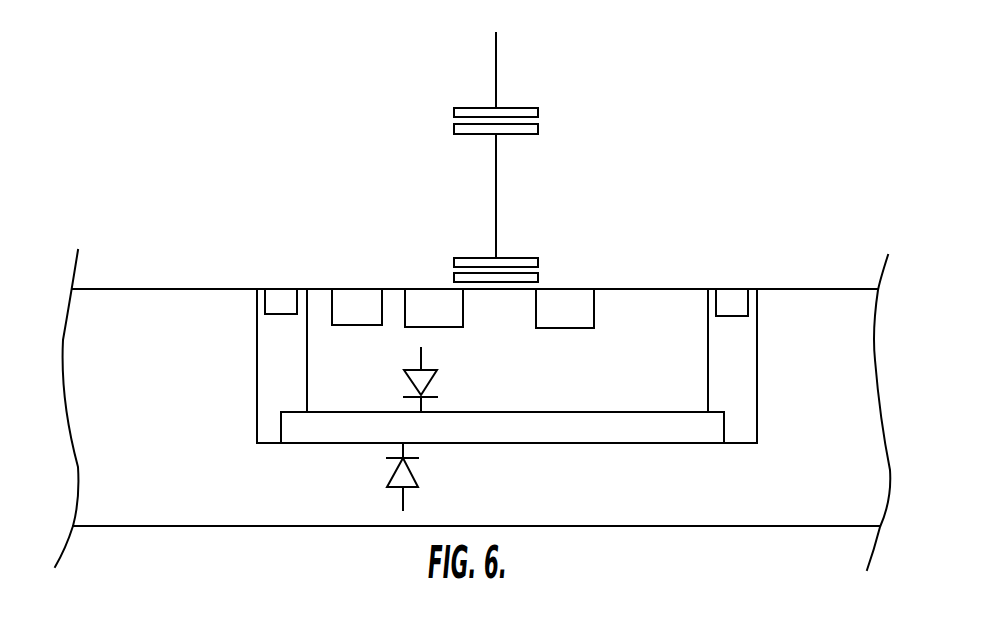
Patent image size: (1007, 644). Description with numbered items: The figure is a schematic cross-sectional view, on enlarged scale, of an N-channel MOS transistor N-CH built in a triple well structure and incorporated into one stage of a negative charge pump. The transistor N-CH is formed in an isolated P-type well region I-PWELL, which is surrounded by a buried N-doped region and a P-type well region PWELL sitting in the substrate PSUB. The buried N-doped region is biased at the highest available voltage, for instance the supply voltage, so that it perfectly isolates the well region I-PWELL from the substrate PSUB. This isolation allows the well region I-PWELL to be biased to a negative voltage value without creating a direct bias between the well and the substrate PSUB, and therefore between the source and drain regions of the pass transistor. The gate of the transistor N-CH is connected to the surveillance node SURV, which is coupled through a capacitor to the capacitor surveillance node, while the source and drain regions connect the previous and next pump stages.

The surveillance node SURV is at (496, 173).
The N-channel MOS transistor N-CH is at (501, 208).
The well region PWELL is at (507, 343).
The well region I-PWELL is at (473, 399).
The substrate PSUB is at (472, 410).